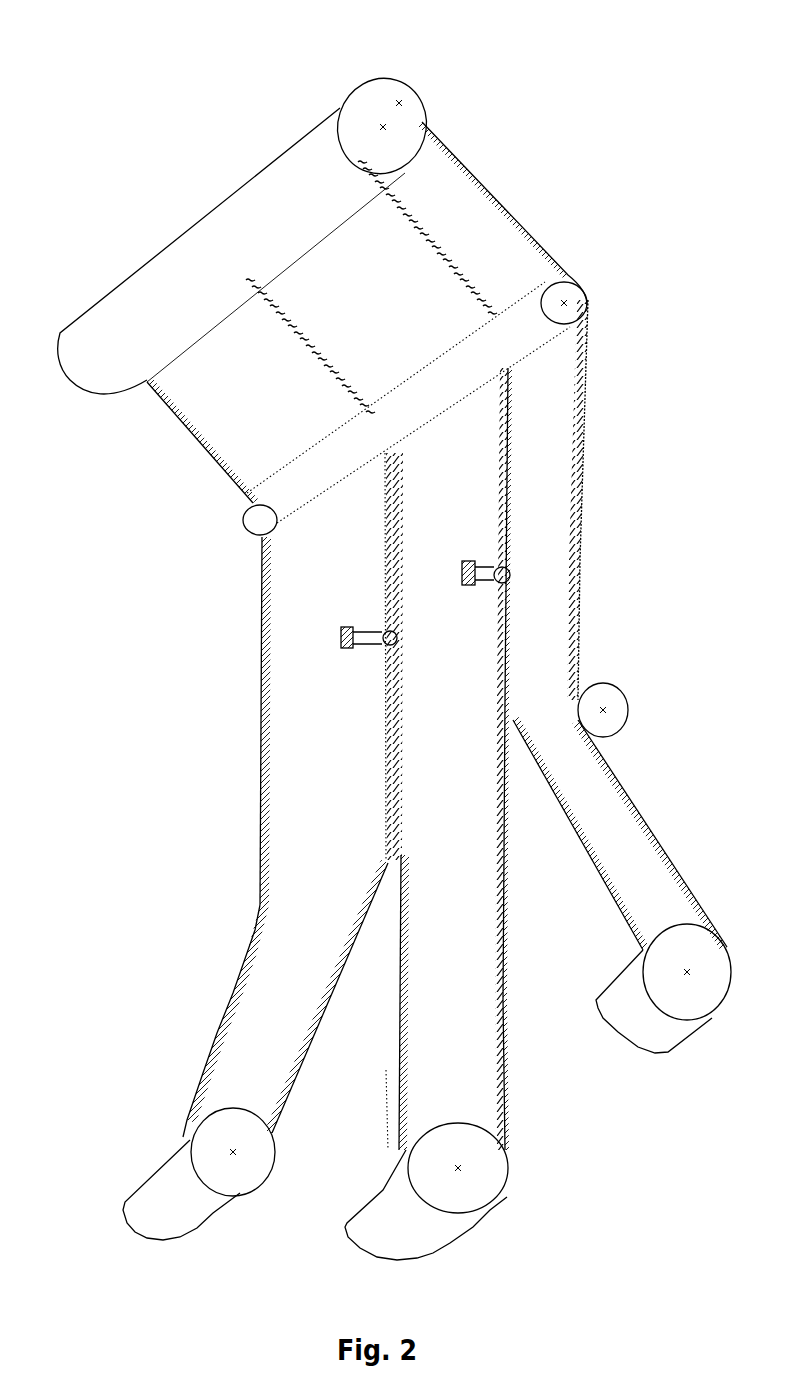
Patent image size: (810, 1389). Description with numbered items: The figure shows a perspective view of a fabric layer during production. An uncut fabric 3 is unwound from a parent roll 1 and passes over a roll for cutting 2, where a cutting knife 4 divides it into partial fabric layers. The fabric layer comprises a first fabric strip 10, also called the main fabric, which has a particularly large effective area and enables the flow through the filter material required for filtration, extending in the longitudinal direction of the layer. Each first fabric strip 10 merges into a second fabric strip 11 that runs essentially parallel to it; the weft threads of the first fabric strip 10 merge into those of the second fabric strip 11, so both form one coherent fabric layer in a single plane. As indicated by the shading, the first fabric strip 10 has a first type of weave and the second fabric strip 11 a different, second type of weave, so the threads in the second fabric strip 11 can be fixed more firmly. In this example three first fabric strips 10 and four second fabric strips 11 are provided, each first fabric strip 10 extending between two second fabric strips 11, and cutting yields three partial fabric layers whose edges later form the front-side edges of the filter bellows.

The parent roll 1 is at (397, 83).
The roll for cutting 2 is at (573, 292).
The uncut fabric 3 is at (480, 183).
The cutting knife 4 is at (368, 647).
The first fabric strip 10 is at (410, 856).
The second fabric strip 11 is at (374, 697).